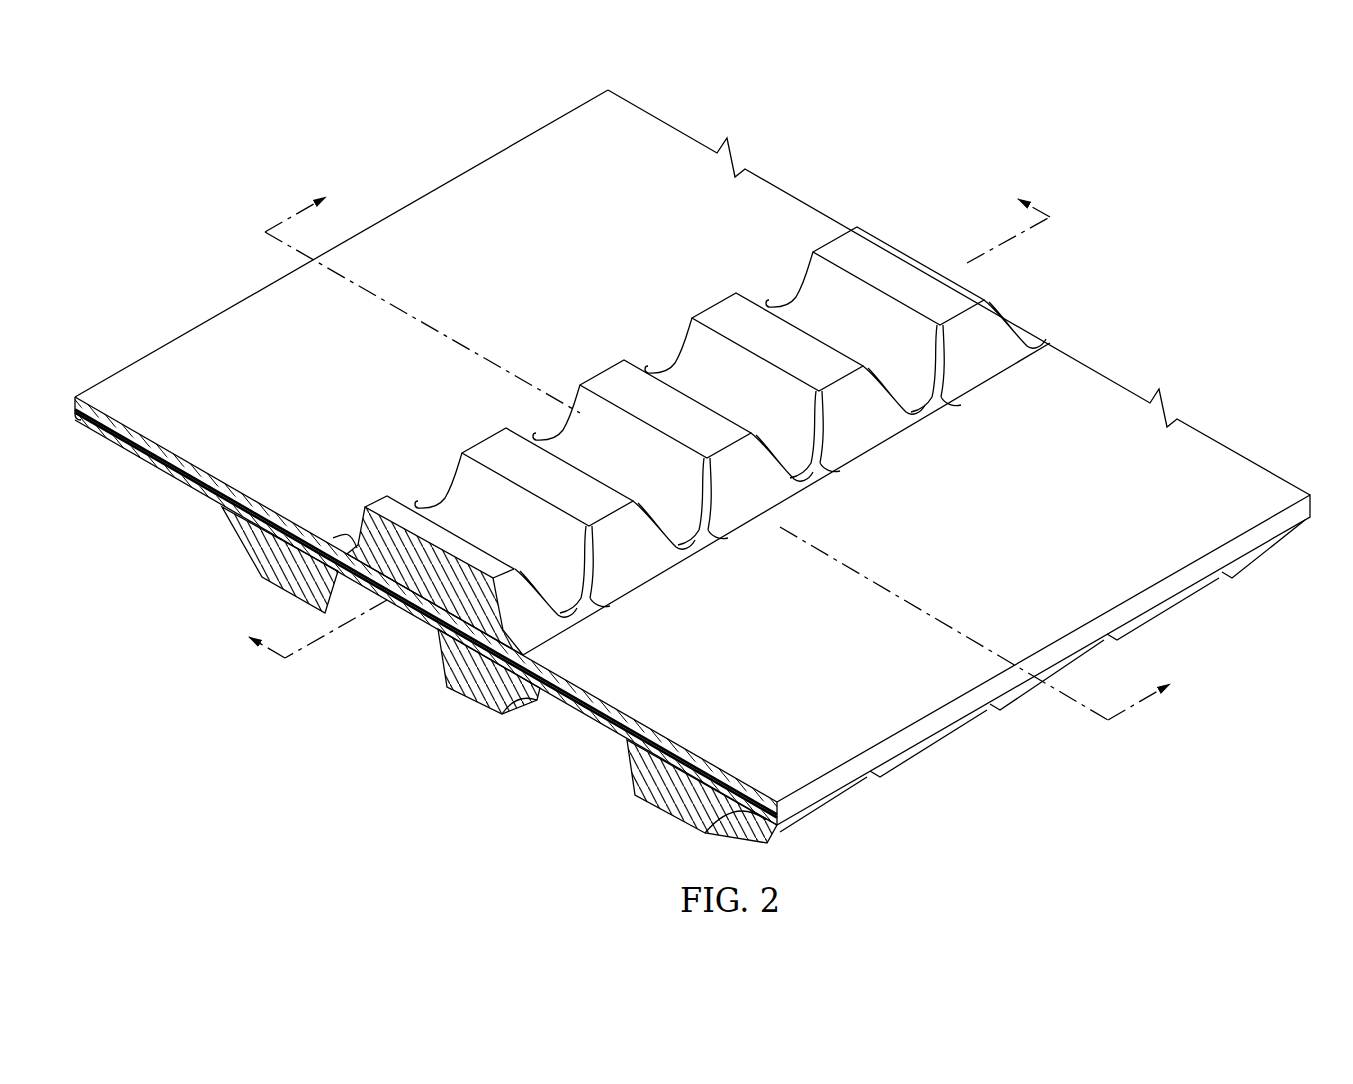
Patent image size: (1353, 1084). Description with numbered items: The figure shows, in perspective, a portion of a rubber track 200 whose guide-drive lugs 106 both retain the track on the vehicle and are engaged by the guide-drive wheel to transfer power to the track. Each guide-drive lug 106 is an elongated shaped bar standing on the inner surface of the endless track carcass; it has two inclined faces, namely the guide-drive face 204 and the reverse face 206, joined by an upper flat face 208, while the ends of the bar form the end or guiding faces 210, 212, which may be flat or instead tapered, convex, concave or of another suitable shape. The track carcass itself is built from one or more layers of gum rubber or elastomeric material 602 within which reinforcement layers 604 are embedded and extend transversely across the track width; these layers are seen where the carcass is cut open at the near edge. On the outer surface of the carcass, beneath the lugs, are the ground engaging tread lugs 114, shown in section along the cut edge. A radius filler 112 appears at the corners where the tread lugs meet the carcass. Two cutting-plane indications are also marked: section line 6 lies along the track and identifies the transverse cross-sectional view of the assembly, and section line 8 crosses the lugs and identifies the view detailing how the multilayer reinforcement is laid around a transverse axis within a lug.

The track portion 200 is at (692, 466).
The guide-drive lug 106 is at (677, 407).
The guide-drive face 204 is at (693, 357).
The reverse face 206 is at (845, 347).
The upper flat face 208 is at (795, 335).
The end or guiding face 210 is at (687, 324).
The end or guiding face 212 is at (993, 322).
The gum rubber or elastomeric material 602 is at (413, 618).
The reinforcement layer 604 is at (600, 727).
The ground engaging tread lug 114 is at (487, 688).
The radius filler 112 is at (545, 703).
The section line 6- 6 is at (727, 446).
The section line 8- 8 is at (640, 415).